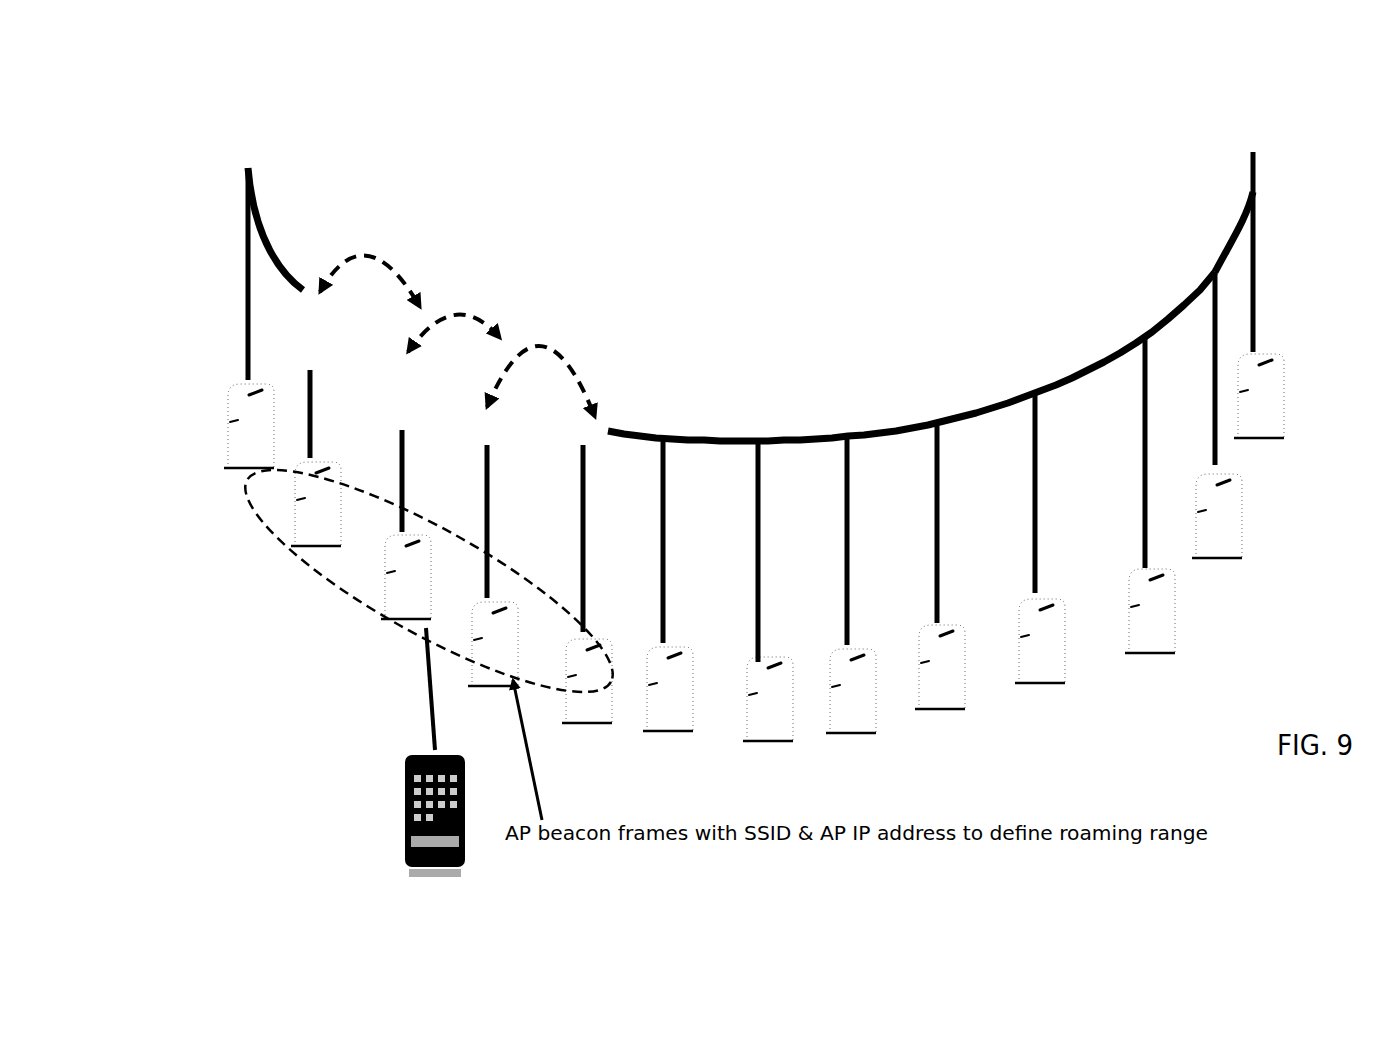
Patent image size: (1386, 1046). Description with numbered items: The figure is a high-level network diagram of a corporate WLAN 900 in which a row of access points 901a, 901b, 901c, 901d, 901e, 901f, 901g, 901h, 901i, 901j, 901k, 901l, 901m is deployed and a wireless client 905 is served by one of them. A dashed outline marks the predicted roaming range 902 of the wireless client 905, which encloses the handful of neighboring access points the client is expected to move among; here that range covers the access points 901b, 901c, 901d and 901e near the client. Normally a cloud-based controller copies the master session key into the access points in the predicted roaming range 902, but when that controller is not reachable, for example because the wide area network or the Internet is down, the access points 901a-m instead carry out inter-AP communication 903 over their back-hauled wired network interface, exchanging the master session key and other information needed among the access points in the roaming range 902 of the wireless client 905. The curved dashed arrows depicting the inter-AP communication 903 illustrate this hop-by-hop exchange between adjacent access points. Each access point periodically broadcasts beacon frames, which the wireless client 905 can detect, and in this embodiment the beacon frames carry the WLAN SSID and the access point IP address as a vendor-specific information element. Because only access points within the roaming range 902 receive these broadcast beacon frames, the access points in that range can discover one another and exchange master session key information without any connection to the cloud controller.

The corporate WLAN 900 is at (1110, 105).
The AP 901a is at (213, 448).
The AP 901b is at (268, 515).
The AP 901c is at (373, 608).
The AP 901d is at (455, 668).
The AP 901e is at (575, 725).
The AP 901f is at (655, 733).
The AP 901g is at (740, 742).
The AP 901h is at (823, 732).
The AP 901i is at (935, 710).
The AP 901j is at (1020, 683).
The AP 901k is at (1170, 632).
The AP 901l is at (1235, 540).
The AP 901m is at (1283, 435).
The roaming range 902 is at (505, 560).
The inter-AP communication 903 is at (530, 258).
The wireless client 905 is at (403, 793).